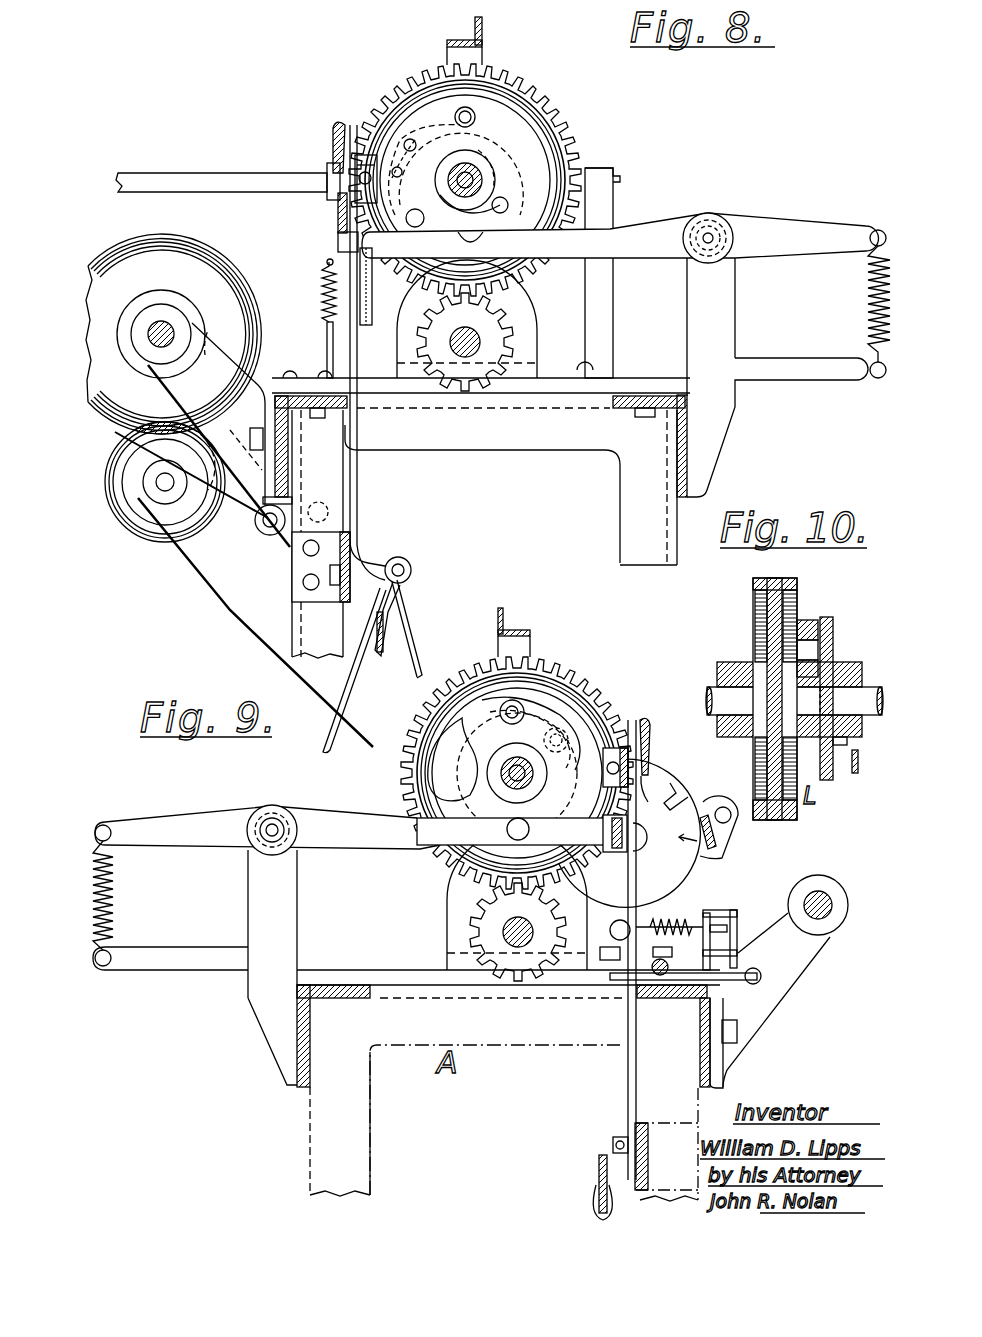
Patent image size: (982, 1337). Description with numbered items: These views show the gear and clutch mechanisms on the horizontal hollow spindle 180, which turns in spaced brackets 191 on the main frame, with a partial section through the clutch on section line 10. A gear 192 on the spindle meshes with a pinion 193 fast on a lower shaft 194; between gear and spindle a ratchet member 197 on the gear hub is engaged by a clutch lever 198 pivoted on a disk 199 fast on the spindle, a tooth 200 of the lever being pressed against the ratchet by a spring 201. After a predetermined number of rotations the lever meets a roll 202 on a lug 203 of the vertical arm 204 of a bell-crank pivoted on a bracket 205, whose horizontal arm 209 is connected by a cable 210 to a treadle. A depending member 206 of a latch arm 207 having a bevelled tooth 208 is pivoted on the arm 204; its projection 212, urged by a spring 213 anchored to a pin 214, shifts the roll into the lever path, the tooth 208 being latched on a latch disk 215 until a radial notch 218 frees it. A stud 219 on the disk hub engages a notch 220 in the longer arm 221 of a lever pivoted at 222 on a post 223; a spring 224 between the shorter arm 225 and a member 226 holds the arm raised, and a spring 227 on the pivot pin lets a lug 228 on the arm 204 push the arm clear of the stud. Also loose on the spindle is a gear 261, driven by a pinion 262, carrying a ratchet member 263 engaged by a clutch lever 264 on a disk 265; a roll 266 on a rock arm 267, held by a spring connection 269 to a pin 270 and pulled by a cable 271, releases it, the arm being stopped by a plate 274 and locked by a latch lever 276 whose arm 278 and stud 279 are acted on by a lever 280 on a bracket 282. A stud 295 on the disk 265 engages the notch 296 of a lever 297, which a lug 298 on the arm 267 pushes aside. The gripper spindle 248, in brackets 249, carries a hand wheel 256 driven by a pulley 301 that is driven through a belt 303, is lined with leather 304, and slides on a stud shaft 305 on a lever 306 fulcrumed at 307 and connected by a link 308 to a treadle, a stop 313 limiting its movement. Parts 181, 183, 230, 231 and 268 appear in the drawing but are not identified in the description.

In FIG. 8, the machine frame bracket 10 is at (472, 60).
In FIG. 9, the horizontal hollow spindle 180 is at (522, 767).
In FIG. 10, the horizontal hollow spindle 180 is at (710, 693).
In FIG. 8, the bar 181 is at (140, 173).
In FIG. 8, the frame member 183 is at (600, 330).
In FIG. 8, the spaced brackets 191 is at (532, 372).
In FIG. 9, the spaced brackets 191 is at (445, 930).
In FIG. 8, the gear 192 is at (525, 73).
In FIG. 10, the gear 192 is at (755, 585).
In FIG. 8, the pinion 193 is at (448, 380).
In FIG. 8, the lower parallel shaft 194 is at (477, 350).
In FIG. 9, the lower parallel shaft 194 is at (510, 942).
In FIG. 8, the ratchet member 197 is at (503, 172).
In FIG. 10, the ratchet member 197 is at (739, 648).
In FIG. 8, the clutch lever 198 is at (503, 123).
In FIG. 10, the clutch lever 198 is at (755, 612).
In FIG. 8, the disk 199 is at (540, 200).
In FIG. 10, the disk 199 is at (830, 653).
In FIG. 8, the tooth 200 is at (512, 190).
In FIG. 8, the spring 201 is at (424, 155).
In FIG. 8, the roll 202 is at (352, 120).
In FIG. 8, the lug 203 is at (362, 198).
In FIG. 8, the vertical arm 204 is at (358, 500).
In FIG. 8, the bracket 205 is at (297, 577).
In FIG. 8, the depending member 206 is at (340, 245).
In FIG. 8, the latch arm 207 is at (337, 135).
In FIG. 9, the latch arm 207 is at (643, 725).
In FIG. 9, the bevelled tooth portion 208 is at (647, 795).
In FIG. 8, the horizontal arm 209 is at (403, 562).
In FIG. 9, the horizontal arm 209 is at (598, 1162).
In FIG. 8, the cable 210 is at (383, 636).
In FIG. 9, the cable 210 is at (597, 1205).
In FIG. 8, the lug or projection 212 is at (345, 232).
In FIG. 8, the spring 213 is at (322, 290).
In FIG. 8, the pin 214 is at (330, 340).
In FIG. 9, the latch disk 215 is at (712, 842).
In FIG. 9, the radial notch 218 is at (680, 796).
In FIG. 8, the stud 219 is at (405, 225).
In FIG. 10, the stud 219 is at (848, 742).
In FIG. 8, the notch 220 is at (548, 222).
In FIG. 10, the notch 220 is at (852, 755).
In FIG. 8, the longer arm 221 is at (655, 230).
In FIG. 10, the longer arm 221 is at (858, 775).
In FIG. 8, the pivot pin 222 is at (710, 232).
In FIG. 8, the post 223 is at (723, 322).
In FIG. 8, the spring 224 is at (868, 297).
In FIG. 8, the shorter arm 225 is at (833, 226).
In FIG. 8, the rearwardly projecting member 226 is at (817, 375).
In FIG. 8, the spring 227 is at (733, 217).
In FIG. 8, the lug 228 is at (366, 280).
In FIG. 9, the pawl 230 is at (710, 828).
In FIG. 9, the pivot 231 is at (737, 822).
In FIG. 8, the longitudinal spindle 248 is at (158, 322).
In FIG. 9, the longitudinal spindle 248 is at (833, 903).
In FIG. 8, the brackets 249 is at (172, 316).
In FIG. 9, the brackets 249 is at (803, 963).
In FIG. 8, the hand wheel 256 is at (160, 247).
In FIG. 9, the gear 261 is at (432, 866).
In FIG. 9, the pinion 262 is at (475, 945).
In FIG. 9, the ratchet member 263 is at (600, 790).
In FIG. 9, the clutch lever 264 is at (462, 737).
In FIG. 9, the disk 265 is at (562, 712).
In FIG. 9, the roll 266 is at (605, 775).
In FIG. 9, the rock arm 267 is at (635, 1114).
In FIG. 9, the link 268 is at (647, 1122).
In FIG. 9, the spring connection 269 is at (690, 930).
In FIG. 9, the pin 270 is at (623, 1033).
In FIG. 9, the cable 271 is at (628, 1030).
In FIG. 9, the plate 274 is at (700, 982).
In FIG. 9, the latch lever 276 is at (655, 937).
In FIG. 9, the outwardly projecting arm 278 is at (757, 980).
In FIG. 9, the upstanding stud 279 is at (825, 937).
In FIG. 9, the lever 280 is at (718, 917).
In FIG. 9, the bracket 282 is at (740, 957).
In FIG. 9, the stud 295 is at (518, 841).
In FIG. 9, the notch 296 is at (505, 824).
In FIG. 9, the lever 297 is at (318, 822).
In FIG. 9, the lug 298 is at (613, 852).
In FIG. 8, the pulley 301 is at (140, 538).
In FIG. 8, the belt 303 is at (250, 640).
In FIG. 8, the leather 304 is at (219, 435).
In FIG. 8, the stud shaft 305 is at (135, 441).
In FIG. 8, the lever 306 is at (217, 520).
In FIG. 8, the fulcrum 307 is at (256, 530).
In FIG. 8, the link 308 is at (320, 738).
In FIG. 8, the stop 313 is at (318, 505).